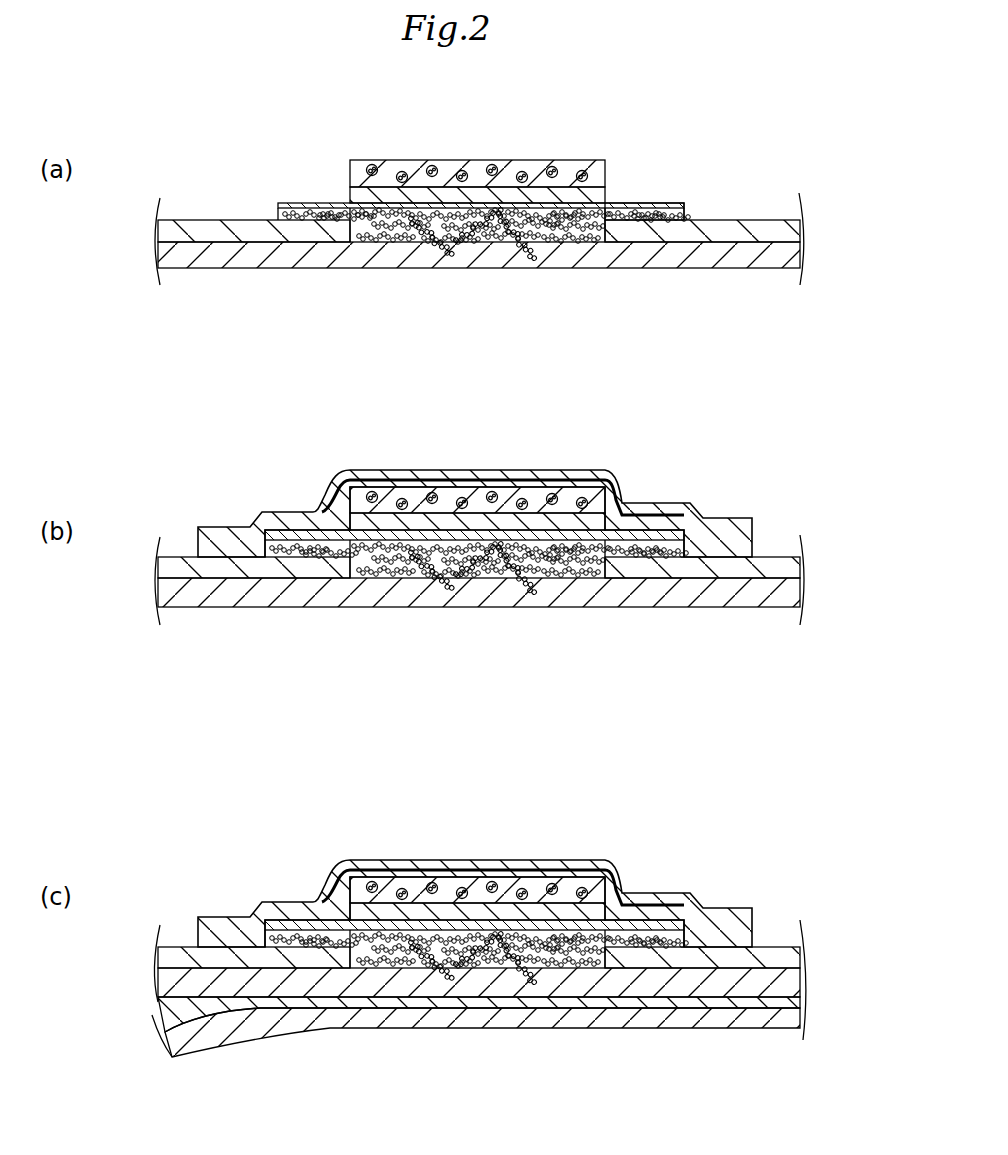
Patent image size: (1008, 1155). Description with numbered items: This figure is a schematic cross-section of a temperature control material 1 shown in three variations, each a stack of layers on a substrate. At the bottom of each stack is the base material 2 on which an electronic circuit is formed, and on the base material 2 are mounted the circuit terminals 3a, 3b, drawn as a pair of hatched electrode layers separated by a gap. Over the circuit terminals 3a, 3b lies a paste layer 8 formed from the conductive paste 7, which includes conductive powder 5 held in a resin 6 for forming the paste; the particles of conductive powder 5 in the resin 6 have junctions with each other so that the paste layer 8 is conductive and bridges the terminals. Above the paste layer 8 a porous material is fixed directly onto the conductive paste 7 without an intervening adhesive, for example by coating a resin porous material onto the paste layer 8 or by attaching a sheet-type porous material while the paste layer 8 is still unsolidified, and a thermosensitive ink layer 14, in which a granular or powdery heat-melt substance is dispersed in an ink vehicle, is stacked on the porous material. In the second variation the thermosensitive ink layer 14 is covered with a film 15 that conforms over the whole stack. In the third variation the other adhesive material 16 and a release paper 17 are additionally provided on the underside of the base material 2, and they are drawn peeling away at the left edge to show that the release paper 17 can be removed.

The temperature control material 1 is at (738, 312).
The base material 2 is at (509, 983).
The circuit terminal 3a is at (740, 953).
The circuit terminal 3b is at (210, 953).
The conductive powder 5 is at (292, 208).
The resin for forming the paste 6 is at (283, 211).
The conductive paste 7 is at (206, 163).
The paste layer 8 is at (660, 204).
The thermosensitive ink layer 14 is at (600, 500).
The film 15 is at (548, 478).
The adhesive material 16 is at (516, 1014).
The release paper 17 is at (513, 1033).